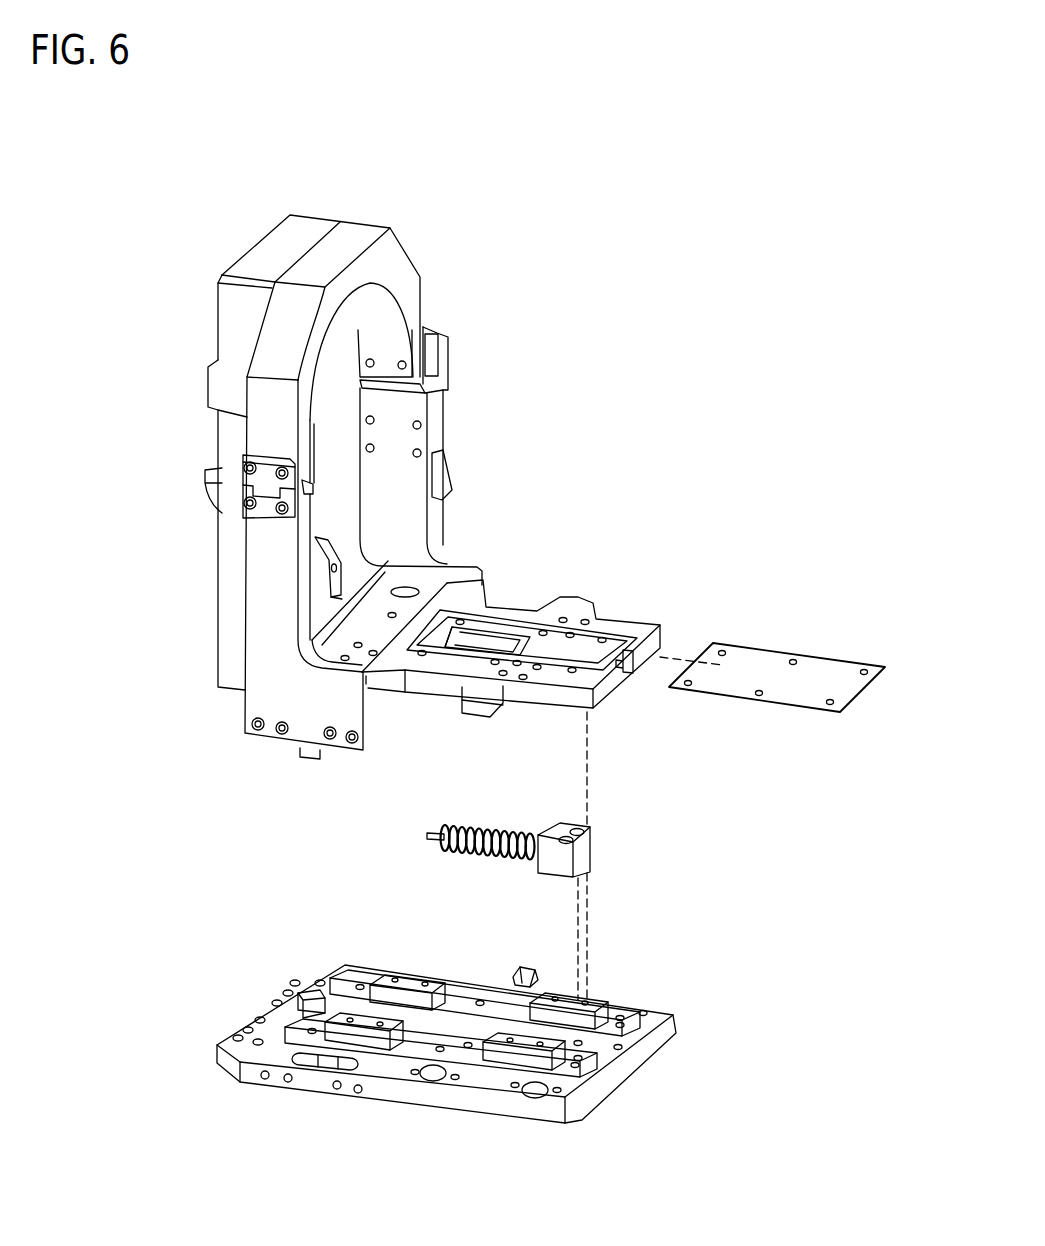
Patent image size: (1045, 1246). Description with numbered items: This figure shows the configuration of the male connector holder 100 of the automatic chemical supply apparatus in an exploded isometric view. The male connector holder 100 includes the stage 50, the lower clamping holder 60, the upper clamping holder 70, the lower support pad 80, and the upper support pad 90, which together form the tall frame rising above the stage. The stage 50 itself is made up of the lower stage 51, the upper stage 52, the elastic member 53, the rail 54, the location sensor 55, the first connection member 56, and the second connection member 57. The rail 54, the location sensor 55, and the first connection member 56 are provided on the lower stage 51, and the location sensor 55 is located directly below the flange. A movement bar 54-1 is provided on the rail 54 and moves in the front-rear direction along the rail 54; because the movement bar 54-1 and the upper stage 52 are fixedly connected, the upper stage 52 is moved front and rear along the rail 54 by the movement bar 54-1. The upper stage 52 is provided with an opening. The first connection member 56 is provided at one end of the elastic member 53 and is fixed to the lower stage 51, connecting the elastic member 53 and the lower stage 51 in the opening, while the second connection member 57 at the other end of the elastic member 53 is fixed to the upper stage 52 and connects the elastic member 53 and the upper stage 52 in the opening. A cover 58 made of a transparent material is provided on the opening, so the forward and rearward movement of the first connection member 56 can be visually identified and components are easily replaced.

The male connector holder 100 is at (119, 204).
The upper support pad 90 is at (230, 303).
The upper clamping holder 70 is at (398, 259).
The lower support pad 80 is at (222, 538).
The lower clamping holder 60 is at (270, 633).
The second connection member 57 is at (447, 612).
The upper stage 52 is at (648, 615).
The cover 58 is at (835, 665).
The elastic member 53 is at (488, 822).
The first connection member 56 is at (593, 840).
The rail 54 is at (488, 1000).
The movement bar 54-1 is at (400, 980).
The location sensor 55 is at (312, 993).
The stage 50 is at (800, 868).
The lower stage 51 is at (683, 1017).